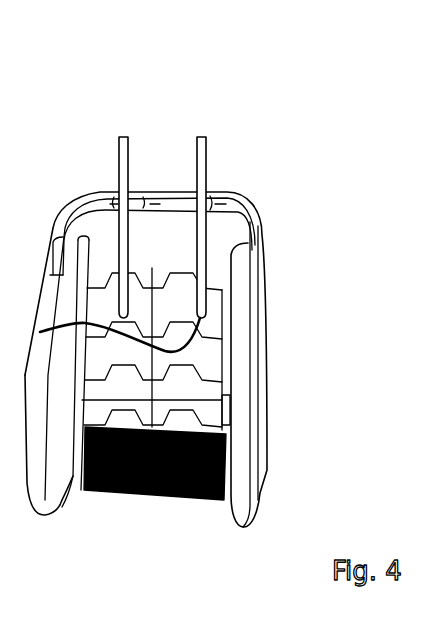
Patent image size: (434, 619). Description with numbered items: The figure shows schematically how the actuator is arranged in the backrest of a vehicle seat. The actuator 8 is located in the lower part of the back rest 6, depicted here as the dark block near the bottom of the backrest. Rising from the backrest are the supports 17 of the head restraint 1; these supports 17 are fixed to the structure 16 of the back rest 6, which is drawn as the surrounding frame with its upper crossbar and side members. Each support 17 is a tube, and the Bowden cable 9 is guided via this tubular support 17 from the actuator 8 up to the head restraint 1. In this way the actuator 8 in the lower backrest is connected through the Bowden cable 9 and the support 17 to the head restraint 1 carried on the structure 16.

The head restraint 1 is at (246, 98).
The back rest 6 is at (170, 91).
The actuator 8 is at (127, 515).
The Bowden cable 9 is at (93, 262).
The structure 16 is at (258, 218).
The support 17 is at (206, 170).